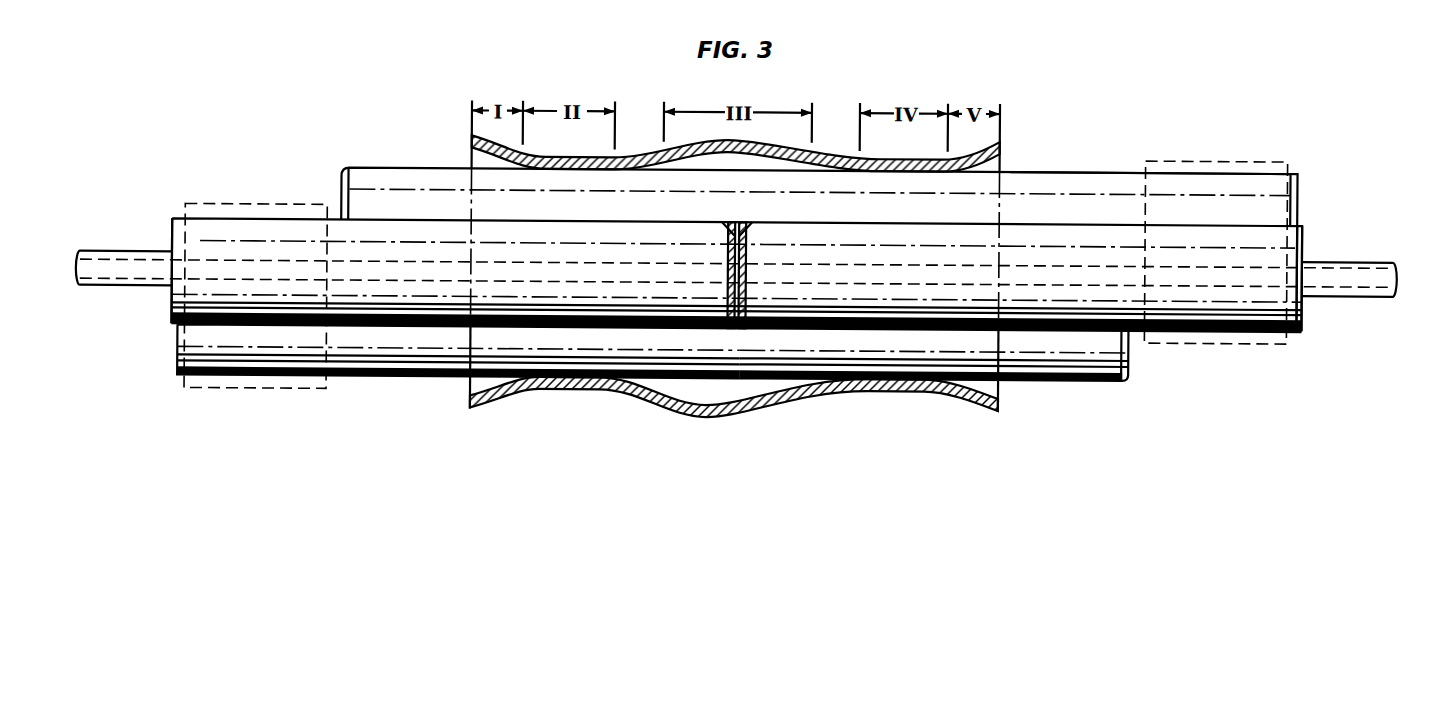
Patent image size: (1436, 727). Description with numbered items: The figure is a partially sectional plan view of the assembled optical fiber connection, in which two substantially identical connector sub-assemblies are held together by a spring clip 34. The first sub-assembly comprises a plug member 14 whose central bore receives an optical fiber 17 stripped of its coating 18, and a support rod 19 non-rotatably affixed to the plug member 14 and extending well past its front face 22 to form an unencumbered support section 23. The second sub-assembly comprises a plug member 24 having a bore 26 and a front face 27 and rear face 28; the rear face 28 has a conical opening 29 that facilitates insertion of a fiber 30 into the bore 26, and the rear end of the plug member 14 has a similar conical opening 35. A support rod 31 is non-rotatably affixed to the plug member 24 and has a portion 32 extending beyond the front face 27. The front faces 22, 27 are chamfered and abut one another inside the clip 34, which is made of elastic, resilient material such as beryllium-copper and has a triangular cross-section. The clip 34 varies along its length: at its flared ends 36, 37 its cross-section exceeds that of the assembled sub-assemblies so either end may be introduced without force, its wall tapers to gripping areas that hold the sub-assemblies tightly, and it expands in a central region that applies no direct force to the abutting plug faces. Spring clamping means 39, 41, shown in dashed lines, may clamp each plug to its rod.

The plug member 14 is at (1192, 330).
The optical fiber 17 is at (1253, 284).
The coating 18 is at (1387, 260).
The support rod 19 is at (1077, 170).
The front face 22 is at (729, 255).
The unencumbered support section 23 is at (422, 172).
The plug member 24 is at (306, 220).
The bore 26 is at (375, 263).
The front face 27 is at (750, 237).
The rear face 28 is at (170, 320).
The conical opening 29 is at (172, 260).
The fiber 30 is at (103, 292).
The support rod 31 is at (345, 380).
The portion 32 is at (1065, 378).
The spring clip 34 is at (827, 410).
The conical opening 35 is at (1303, 262).
The flared end 36 is at (471, 408).
The flared end 37 is at (990, 410).
The spring clamping means 39 is at (262, 207).
The spring clamping means 41 is at (1227, 160).